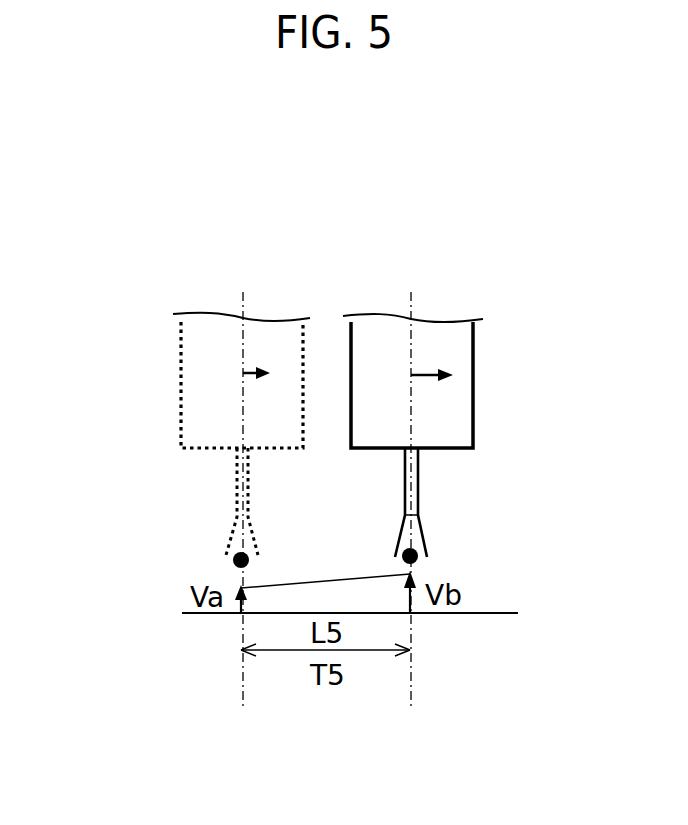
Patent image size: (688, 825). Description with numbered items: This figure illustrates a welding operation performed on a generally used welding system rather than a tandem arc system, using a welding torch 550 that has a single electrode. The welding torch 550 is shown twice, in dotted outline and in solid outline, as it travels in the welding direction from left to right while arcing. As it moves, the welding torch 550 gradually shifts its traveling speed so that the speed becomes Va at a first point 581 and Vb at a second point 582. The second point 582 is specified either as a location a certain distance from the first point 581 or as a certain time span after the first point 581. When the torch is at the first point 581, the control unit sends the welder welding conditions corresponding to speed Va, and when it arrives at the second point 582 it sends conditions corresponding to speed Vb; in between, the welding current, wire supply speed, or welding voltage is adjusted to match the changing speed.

The welding torch 550 is at (182, 393).
The first point 581 is at (233, 554).
The second point 582 is at (414, 550).